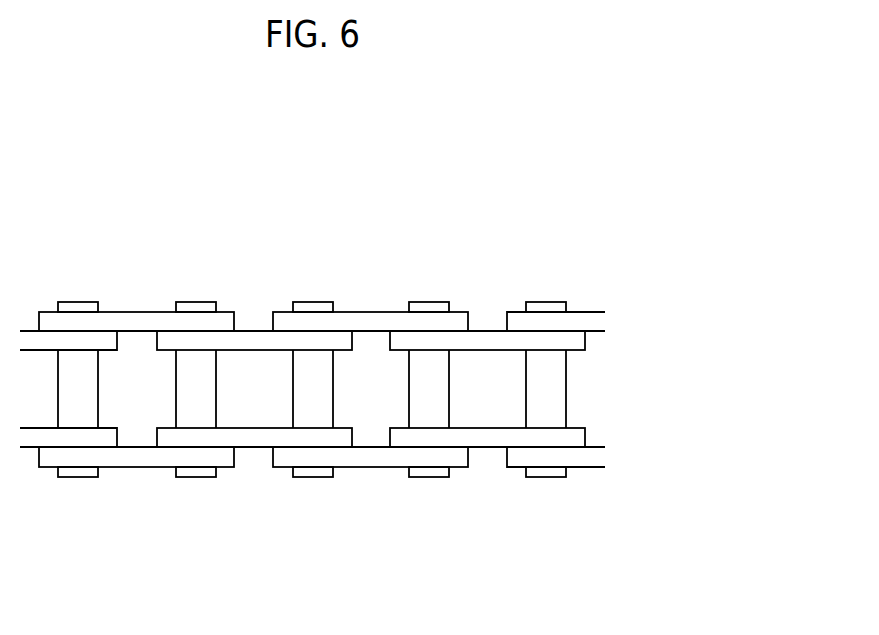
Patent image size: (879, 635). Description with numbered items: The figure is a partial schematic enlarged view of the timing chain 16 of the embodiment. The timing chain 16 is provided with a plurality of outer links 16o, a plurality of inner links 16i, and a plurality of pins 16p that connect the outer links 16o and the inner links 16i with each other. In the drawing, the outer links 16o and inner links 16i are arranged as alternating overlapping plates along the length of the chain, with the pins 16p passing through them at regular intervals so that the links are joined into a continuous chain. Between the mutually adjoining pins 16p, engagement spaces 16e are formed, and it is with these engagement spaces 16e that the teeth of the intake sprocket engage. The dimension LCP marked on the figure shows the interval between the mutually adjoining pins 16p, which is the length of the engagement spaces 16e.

The timing chain 16 is at (628, 200).
The outer links 16o is at (137, 315).
The inner links 16i is at (253, 335).
The pins 16p is at (429, 307).
The engagement spaces 16e is at (158, 399).
The interval between adjoining pins LCP is at (312, 297).